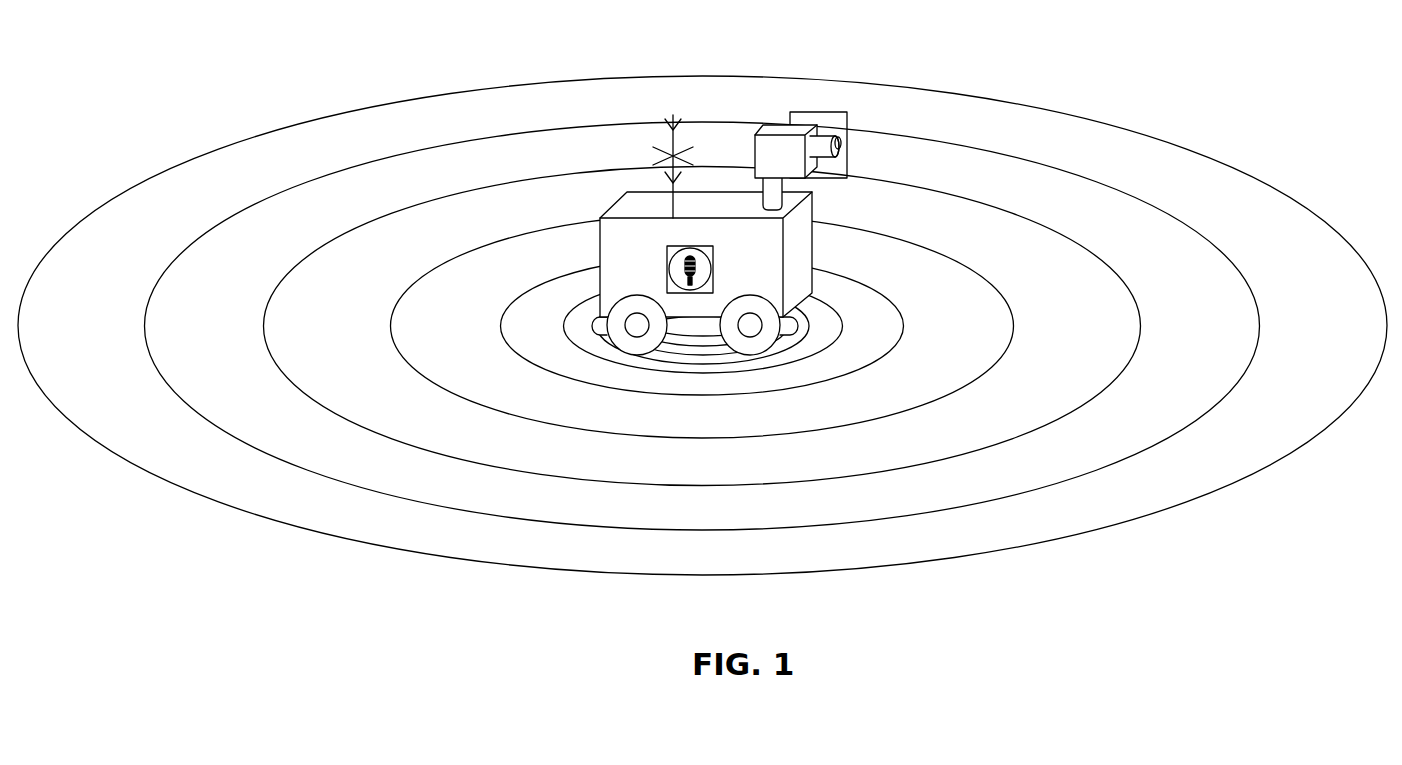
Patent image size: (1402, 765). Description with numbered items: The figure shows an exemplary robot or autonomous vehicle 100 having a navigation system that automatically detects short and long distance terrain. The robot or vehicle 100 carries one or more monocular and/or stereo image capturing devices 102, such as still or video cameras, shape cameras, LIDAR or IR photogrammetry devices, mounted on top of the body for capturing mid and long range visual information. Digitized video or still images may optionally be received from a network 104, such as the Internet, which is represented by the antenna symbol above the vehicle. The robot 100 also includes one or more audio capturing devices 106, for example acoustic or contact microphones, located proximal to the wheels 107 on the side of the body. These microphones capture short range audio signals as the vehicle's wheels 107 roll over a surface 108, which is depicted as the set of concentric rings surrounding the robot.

The robot or autonomous vehicle 100 is at (608, 206).
The image capturing device 102 is at (800, 128).
The network 104 is at (663, 118).
The audio capturing device 106 is at (699, 293).
The wheels 107 is at (597, 336).
The surface 108 is at (540, 446).